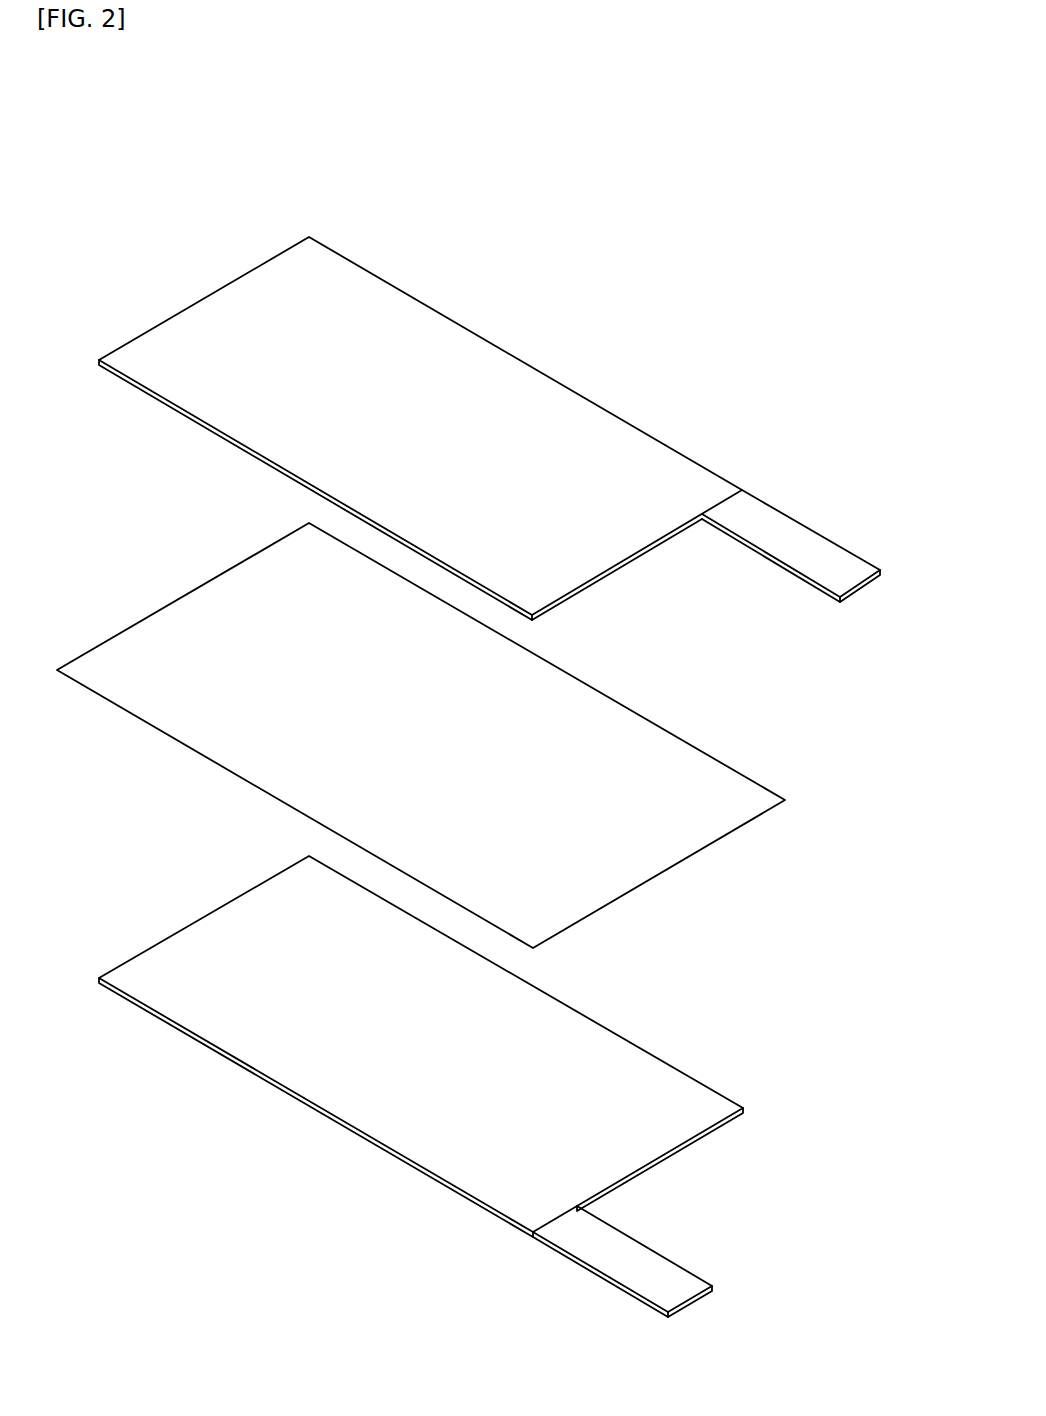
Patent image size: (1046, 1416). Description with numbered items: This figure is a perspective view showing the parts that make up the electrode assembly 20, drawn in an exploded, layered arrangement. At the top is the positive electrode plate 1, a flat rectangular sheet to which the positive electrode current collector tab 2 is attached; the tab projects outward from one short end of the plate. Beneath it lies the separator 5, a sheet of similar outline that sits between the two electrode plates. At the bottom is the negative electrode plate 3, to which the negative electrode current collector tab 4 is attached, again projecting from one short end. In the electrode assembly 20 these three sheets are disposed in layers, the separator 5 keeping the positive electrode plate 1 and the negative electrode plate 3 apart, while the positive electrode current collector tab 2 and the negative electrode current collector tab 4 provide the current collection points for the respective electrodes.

The electrode assembly 20 is at (668, 256).
The positive electrode plate 1 is at (226, 314).
The positive electrode current collector tab 2 is at (828, 560).
The negative electrode plate 3 is at (226, 930).
The negative electrode current collector tab 4 is at (668, 1280).
The separator 5 is at (214, 617).